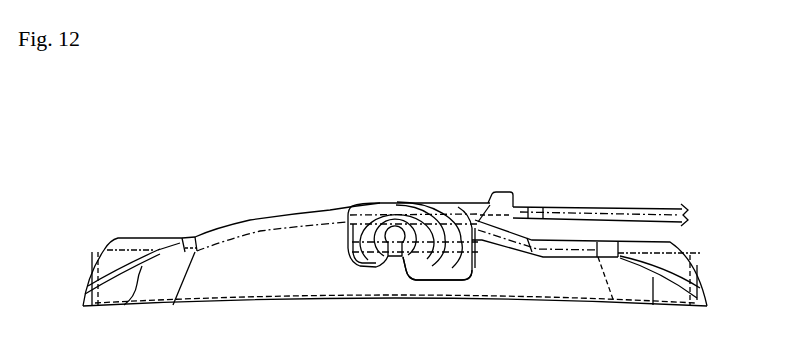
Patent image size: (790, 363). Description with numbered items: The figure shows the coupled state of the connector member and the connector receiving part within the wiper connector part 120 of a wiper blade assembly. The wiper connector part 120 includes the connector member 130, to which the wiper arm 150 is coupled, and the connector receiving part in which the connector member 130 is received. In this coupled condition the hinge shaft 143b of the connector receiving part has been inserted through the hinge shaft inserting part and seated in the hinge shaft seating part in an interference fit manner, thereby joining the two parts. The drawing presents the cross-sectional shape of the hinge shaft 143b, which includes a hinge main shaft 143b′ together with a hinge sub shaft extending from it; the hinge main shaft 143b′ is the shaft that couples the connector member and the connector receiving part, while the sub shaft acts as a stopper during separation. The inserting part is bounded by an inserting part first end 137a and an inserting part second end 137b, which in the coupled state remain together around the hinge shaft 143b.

The wiper connector part 120 is at (182, 208).
The connector member 130 is at (515, 172).
The wiper arm 150 is at (598, 208).
The hinge shaft 143b is at (269, 168).
The hinge main shaft 143b′ is at (349, 226).
The inserting part first end 137a is at (372, 262).
The inserting part second end 137b is at (416, 262).